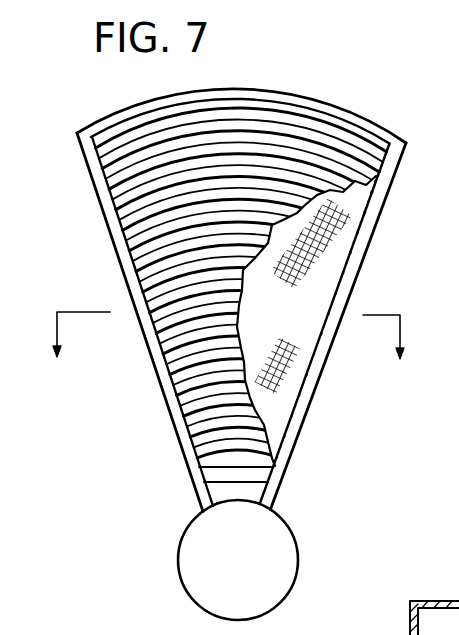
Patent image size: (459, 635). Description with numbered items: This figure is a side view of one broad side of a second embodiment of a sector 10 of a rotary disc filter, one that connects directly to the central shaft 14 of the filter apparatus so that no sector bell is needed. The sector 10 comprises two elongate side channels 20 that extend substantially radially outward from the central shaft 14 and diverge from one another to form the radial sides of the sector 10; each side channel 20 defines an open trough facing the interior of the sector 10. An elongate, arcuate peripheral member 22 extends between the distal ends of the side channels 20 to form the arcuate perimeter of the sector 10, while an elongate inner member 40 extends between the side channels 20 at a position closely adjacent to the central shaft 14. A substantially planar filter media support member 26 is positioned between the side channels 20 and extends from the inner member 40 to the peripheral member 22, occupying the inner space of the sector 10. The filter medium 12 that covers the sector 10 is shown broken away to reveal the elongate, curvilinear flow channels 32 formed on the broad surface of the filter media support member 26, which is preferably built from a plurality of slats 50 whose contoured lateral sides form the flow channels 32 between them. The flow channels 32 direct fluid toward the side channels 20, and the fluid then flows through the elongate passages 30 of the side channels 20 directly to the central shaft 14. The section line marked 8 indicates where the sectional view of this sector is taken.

The sector 10 is at (297, 87).
The filter medium 12 is at (313, 287).
The central shaft 14 is at (283, 552).
The side channels 20 is at (92, 181).
The peripheral member 22 is at (246, 96).
The filter media support member 26 is at (205, 133).
The elongate passages 30 is at (410, 632).
The flow channels 32 is at (315, 128).
The inner member 40 is at (237, 476).
The slats 50 is at (375, 148).
The section line 8- 8 is at (229, 353).